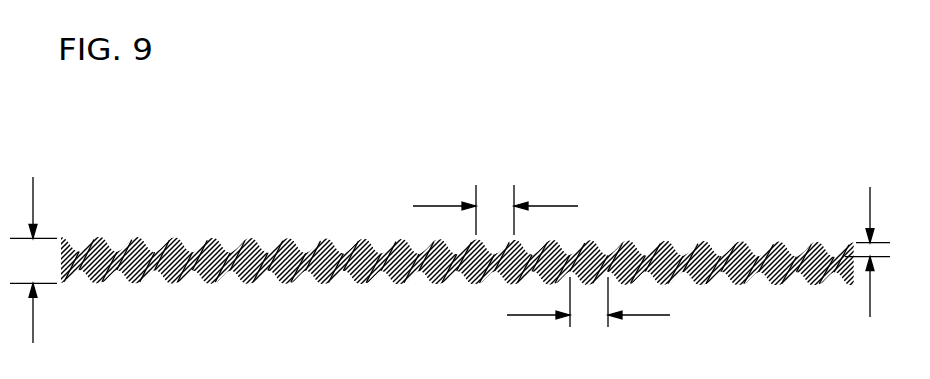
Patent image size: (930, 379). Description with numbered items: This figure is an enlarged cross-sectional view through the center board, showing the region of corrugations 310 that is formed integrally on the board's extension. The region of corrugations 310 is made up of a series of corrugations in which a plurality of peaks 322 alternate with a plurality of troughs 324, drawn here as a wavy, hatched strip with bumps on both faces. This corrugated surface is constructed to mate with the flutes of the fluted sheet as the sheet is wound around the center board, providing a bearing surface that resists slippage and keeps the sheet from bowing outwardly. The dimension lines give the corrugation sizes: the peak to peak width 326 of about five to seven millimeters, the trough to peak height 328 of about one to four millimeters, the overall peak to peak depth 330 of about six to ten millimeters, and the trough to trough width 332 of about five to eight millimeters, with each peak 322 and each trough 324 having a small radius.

The region of corrugations 310 is at (325, 168).
The peaks 322 is at (174, 238).
The troughs 324 is at (269, 334).
The peak to peak width 326 is at (495, 210).
The trough to peak height 328 is at (867, 240).
The peak to peak depth 330 is at (33, 260).
The trough to trough width 332 is at (588, 302).